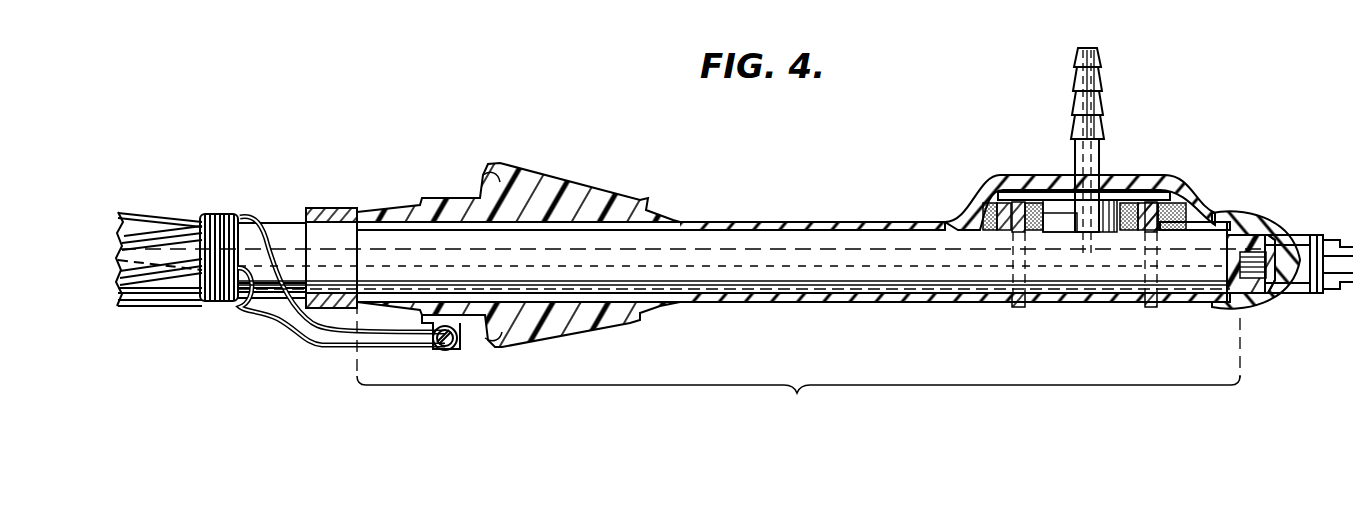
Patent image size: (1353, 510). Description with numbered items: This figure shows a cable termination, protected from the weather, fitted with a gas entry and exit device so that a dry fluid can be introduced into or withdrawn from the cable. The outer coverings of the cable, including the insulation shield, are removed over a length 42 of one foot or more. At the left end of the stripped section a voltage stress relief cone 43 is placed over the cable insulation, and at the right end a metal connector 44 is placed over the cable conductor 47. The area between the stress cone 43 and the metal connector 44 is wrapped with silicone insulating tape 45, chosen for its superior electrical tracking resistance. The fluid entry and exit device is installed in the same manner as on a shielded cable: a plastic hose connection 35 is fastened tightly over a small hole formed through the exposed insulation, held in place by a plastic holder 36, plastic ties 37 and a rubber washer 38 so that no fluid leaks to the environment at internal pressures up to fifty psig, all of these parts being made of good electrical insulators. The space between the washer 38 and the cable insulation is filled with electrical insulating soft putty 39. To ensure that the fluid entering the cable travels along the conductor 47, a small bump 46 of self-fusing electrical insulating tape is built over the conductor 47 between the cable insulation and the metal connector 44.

The plastic hose connection 35 is at (1103, 96).
The plastic holder 36 is at (1128, 196).
The plastic ties 37 is at (1150, 305).
The rubber washer 38 is at (1040, 215).
The electrical insulating soft putty 39 is at (992, 206).
The length 42 is at (798, 362).
The voltage stress relief cone 43 is at (548, 195).
The metal connector 44 is at (1300, 297).
The silicone insulating tape 45 is at (745, 225).
The bump of self-fusing electrical insulating tape 46 is at (1240, 228).
The cable conductor 47 is at (1257, 252).